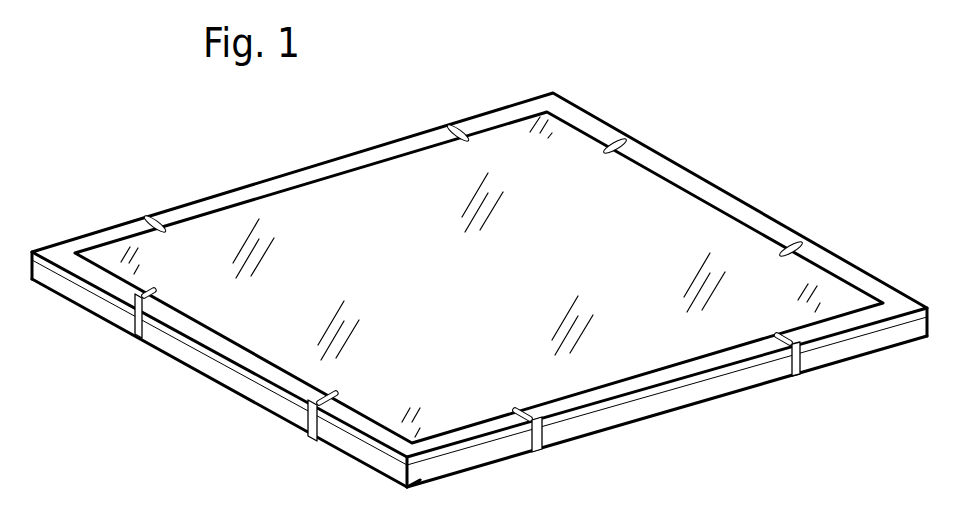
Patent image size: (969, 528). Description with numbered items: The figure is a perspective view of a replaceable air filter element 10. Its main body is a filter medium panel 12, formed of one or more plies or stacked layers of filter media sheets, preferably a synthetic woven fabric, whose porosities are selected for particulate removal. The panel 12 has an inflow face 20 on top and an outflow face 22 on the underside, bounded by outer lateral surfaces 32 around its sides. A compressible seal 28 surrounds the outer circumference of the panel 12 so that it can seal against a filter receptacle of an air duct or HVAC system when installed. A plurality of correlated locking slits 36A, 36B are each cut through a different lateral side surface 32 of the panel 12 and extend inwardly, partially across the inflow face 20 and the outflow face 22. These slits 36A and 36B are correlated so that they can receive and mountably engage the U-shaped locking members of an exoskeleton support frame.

The replaceable air filter element 10 is at (479, 280).
The filter medium panel 12 is at (645, 196).
The inflow face 20 is at (337, 192).
The outflow face 22 is at (665, 445).
The compressible seal 28 is at (170, 131).
The outer lateral surface 32 is at (227, 372).
The locking slit 36A is at (145, 217).
The locking slit 36B is at (447, 125).